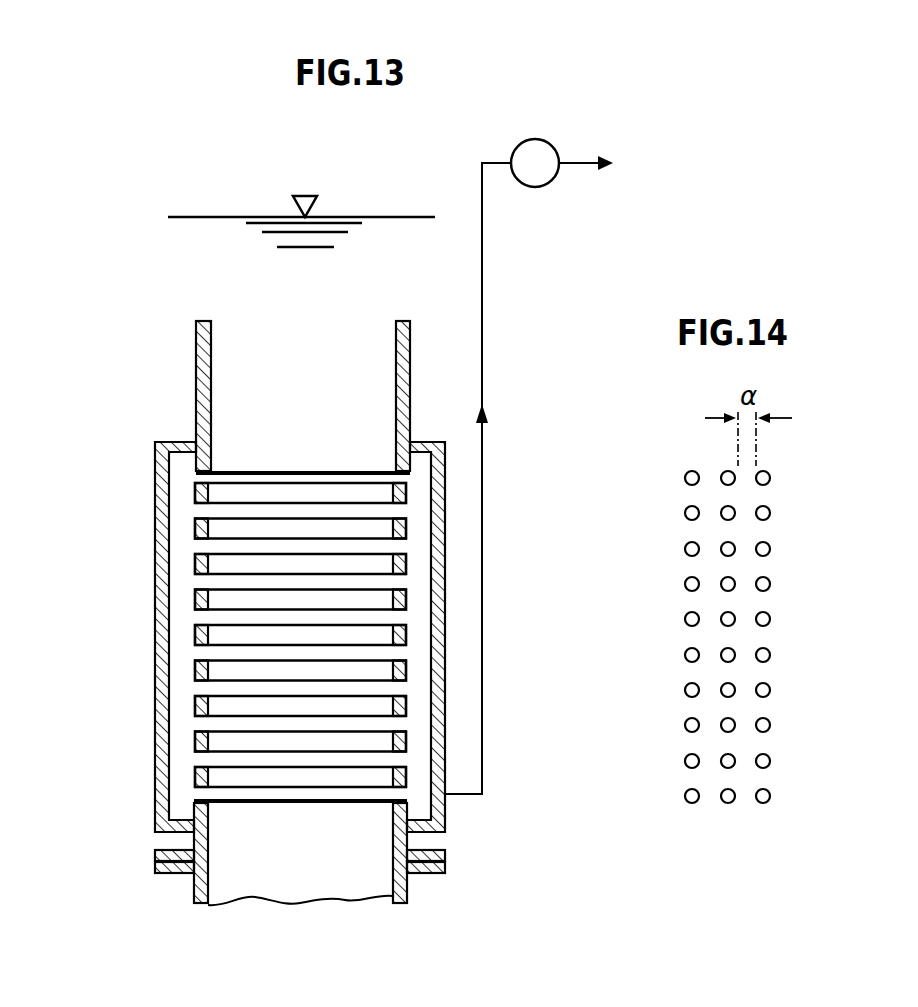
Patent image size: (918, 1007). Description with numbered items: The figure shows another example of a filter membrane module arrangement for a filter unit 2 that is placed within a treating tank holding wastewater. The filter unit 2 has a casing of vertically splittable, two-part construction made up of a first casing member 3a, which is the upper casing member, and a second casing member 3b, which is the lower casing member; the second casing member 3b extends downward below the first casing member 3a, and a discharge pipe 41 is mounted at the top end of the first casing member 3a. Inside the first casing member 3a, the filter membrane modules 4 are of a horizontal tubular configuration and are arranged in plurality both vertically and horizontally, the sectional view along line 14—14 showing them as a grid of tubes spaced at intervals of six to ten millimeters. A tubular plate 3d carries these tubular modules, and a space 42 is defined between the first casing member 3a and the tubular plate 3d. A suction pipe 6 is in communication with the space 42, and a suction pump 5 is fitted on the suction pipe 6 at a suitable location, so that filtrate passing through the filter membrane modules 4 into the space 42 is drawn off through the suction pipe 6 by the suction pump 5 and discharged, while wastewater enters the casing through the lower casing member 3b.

In FIG. 13, the filter unit 2 is at (155, 750).
In FIG. 13, the first casing member 3a is at (155, 613).
In FIG. 13, the second casing member 3b is at (193, 893).
In FIG. 13, the tubular plate 3d is at (196, 540).
In FIG. 13, the filter membrane module 4 is at (240, 470).
In FIG. 14, the filter membrane module 4 is at (685, 478).
In FIG. 13, the discharge pipe 41 is at (196, 373).
In FIG. 13, the space 42 is at (178, 638).
In FIG. 13, the suction pump 5 is at (550, 183).
In FIG. 13, the suction pipe 6 is at (483, 467).
In FIG. 13, the section line 14 is at (265, 408).